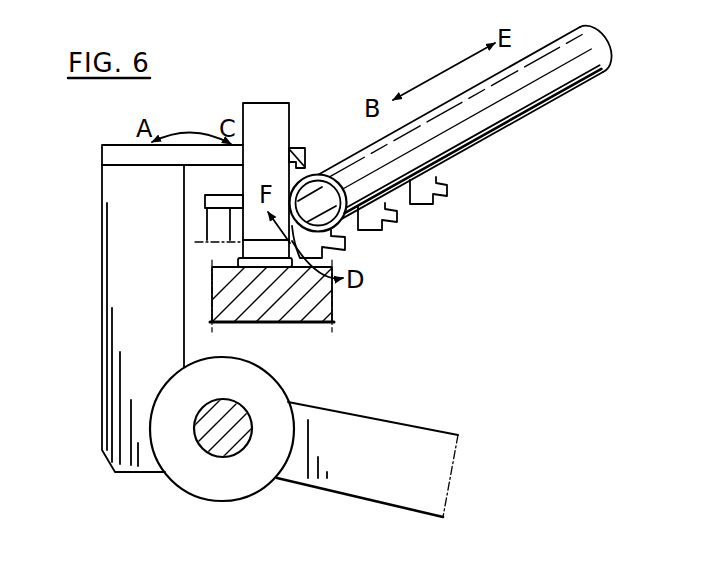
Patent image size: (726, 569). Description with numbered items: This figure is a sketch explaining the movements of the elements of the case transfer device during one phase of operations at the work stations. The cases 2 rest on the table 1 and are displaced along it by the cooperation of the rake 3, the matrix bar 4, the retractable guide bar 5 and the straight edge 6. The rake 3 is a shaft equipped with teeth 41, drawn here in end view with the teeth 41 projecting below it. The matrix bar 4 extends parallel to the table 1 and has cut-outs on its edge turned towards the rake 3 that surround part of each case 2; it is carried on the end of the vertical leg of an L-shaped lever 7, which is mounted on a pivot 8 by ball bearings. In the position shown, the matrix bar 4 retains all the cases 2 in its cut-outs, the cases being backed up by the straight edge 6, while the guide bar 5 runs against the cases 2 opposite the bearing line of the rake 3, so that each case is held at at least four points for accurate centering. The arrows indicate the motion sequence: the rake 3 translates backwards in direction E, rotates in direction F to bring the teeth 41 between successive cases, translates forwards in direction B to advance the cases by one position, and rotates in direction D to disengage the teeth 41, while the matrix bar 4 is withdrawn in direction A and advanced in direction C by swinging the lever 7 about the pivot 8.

The table 1 is at (313, 310).
The case 2 is at (267, 112).
The rake 3 is at (540, 88).
The matrix bar 4 is at (108, 155).
The retractable guide bar 5 is at (208, 203).
The straight edge 6 is at (297, 146).
The L-shaped lever 7 is at (270, 397).
The pivot 8 is at (205, 452).
The teeth 41 is at (423, 197).